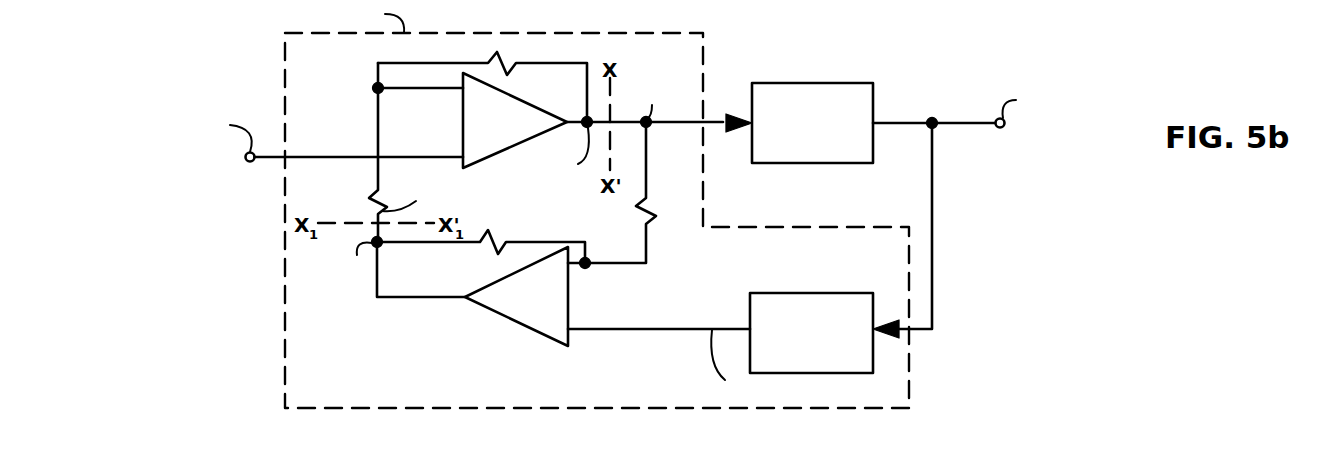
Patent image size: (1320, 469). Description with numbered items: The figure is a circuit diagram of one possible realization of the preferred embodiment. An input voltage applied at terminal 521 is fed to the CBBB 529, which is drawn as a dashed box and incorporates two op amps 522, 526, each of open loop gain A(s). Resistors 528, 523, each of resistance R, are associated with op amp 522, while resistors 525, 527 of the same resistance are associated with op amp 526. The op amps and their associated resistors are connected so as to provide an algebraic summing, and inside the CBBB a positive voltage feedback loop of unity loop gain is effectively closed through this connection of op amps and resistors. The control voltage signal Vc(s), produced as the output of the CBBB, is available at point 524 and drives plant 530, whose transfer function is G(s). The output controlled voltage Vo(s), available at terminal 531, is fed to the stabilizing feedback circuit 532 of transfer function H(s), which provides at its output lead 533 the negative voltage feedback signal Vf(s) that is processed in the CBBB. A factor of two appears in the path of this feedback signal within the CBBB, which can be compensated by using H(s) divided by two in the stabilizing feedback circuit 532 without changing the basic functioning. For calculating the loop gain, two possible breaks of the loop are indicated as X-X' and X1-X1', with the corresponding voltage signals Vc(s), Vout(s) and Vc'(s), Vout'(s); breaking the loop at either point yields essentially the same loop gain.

The terminal 521 is at (250, 162).
The op amp 522 is at (518, 98).
The resistor 523 is at (494, 62).
The point 524 is at (649, 127).
The resistor 525 is at (651, 209).
The op amp 526 is at (492, 311).
The resistor 527 is at (496, 249).
The resistor 528 is at (375, 201).
The CBBB 529 is at (606, 31).
The plant 530 is at (793, 83).
The terminal 531 is at (1003, 128).
The stabilizing feedback circuit 532 is at (778, 293).
The lead 533 is at (737, 327).